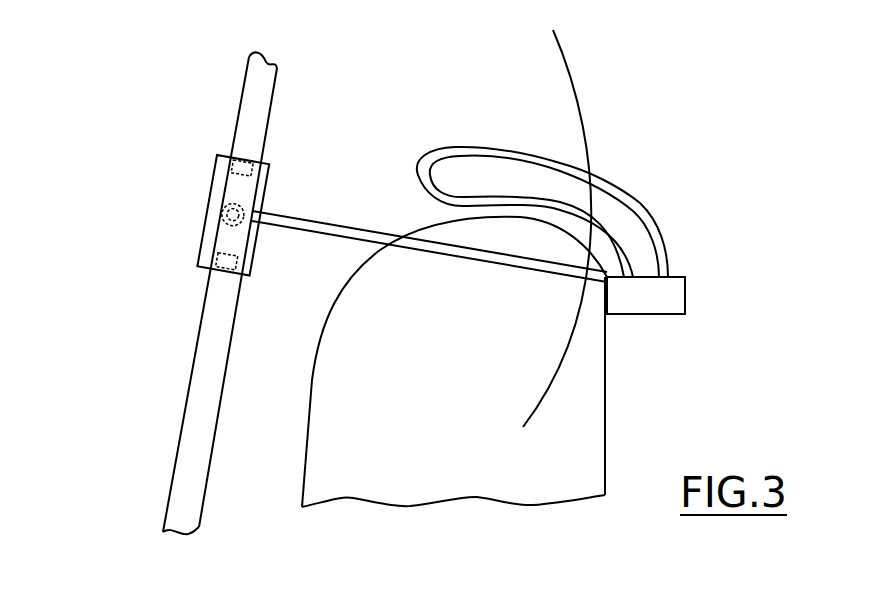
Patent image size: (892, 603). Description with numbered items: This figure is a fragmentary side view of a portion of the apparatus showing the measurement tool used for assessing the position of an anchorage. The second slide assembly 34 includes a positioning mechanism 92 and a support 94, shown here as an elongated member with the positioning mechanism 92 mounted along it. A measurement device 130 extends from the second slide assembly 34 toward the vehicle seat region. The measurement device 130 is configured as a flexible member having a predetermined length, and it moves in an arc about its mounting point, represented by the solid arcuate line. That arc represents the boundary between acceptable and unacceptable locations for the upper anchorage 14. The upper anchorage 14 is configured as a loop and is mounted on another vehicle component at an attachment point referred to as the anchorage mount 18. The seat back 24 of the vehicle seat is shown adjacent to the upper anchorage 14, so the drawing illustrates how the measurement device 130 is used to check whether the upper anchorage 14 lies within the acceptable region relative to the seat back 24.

The second slide assembly 34 is at (122, 84).
The positioning mechanism 92 is at (239, 112).
The support 94 is at (202, 240).
The measurement device 130 is at (302, 221).
The seat back 24 is at (454, 268).
The upper anchorage 14 is at (450, 147).
The anchorage mount 18 is at (640, 314).